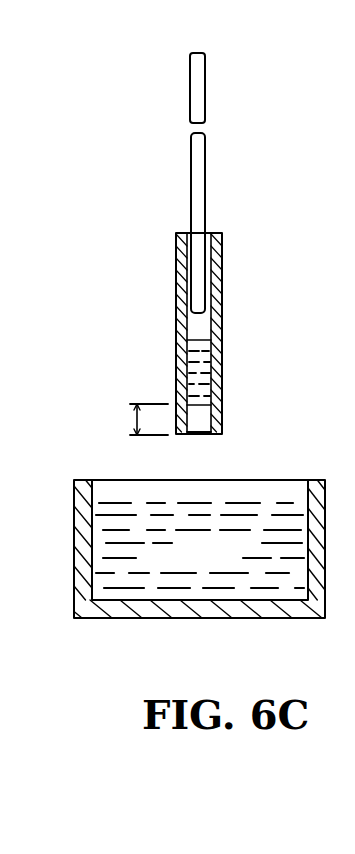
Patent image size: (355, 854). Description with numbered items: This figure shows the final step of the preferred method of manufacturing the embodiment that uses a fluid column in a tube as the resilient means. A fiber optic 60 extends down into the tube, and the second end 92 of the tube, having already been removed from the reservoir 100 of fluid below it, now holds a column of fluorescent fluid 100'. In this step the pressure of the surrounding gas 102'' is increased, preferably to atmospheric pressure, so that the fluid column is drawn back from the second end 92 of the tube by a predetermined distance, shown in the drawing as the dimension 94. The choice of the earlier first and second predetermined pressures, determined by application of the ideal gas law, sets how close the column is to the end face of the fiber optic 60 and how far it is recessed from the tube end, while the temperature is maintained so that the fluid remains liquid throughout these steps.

The fiber optic 60 is at (236, 89).
The second end of tube 92 is at (222, 402).
The depth of liquid in container 94 is at (133, 420).
The reservoir of fluid 100 is at (200, 545).
The fluorescent fluid 100' is at (152, 372).
The surrounding gas 102'' is at (193, 334).